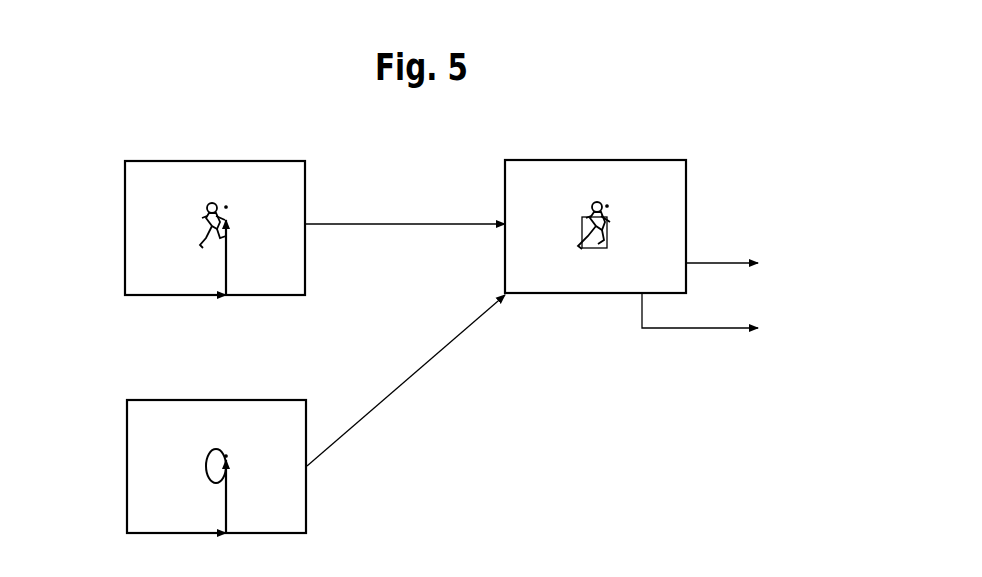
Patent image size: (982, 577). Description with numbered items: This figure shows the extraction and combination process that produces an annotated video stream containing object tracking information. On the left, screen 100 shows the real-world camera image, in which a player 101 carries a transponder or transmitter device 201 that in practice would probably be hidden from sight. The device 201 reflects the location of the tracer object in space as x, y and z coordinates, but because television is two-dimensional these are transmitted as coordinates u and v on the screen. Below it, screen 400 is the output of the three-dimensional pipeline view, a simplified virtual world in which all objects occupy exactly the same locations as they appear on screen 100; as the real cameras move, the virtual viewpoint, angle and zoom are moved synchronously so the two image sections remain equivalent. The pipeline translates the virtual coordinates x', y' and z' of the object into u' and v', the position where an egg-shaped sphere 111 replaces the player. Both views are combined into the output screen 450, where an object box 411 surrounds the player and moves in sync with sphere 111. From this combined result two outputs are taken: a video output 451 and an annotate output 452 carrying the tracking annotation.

The screen 100 is at (148, 140).
The player 101 is at (200, 215).
The transponder or transmitter device 201 is at (226, 207).
The screen 400 is at (155, 383).
The egg-shaped sphere 111 is at (207, 476).
The annotated video stream 450 is at (683, 145).
The object box 411 is at (608, 240).
The video output 451 is at (702, 264).
The annotate output 452 is at (680, 329).